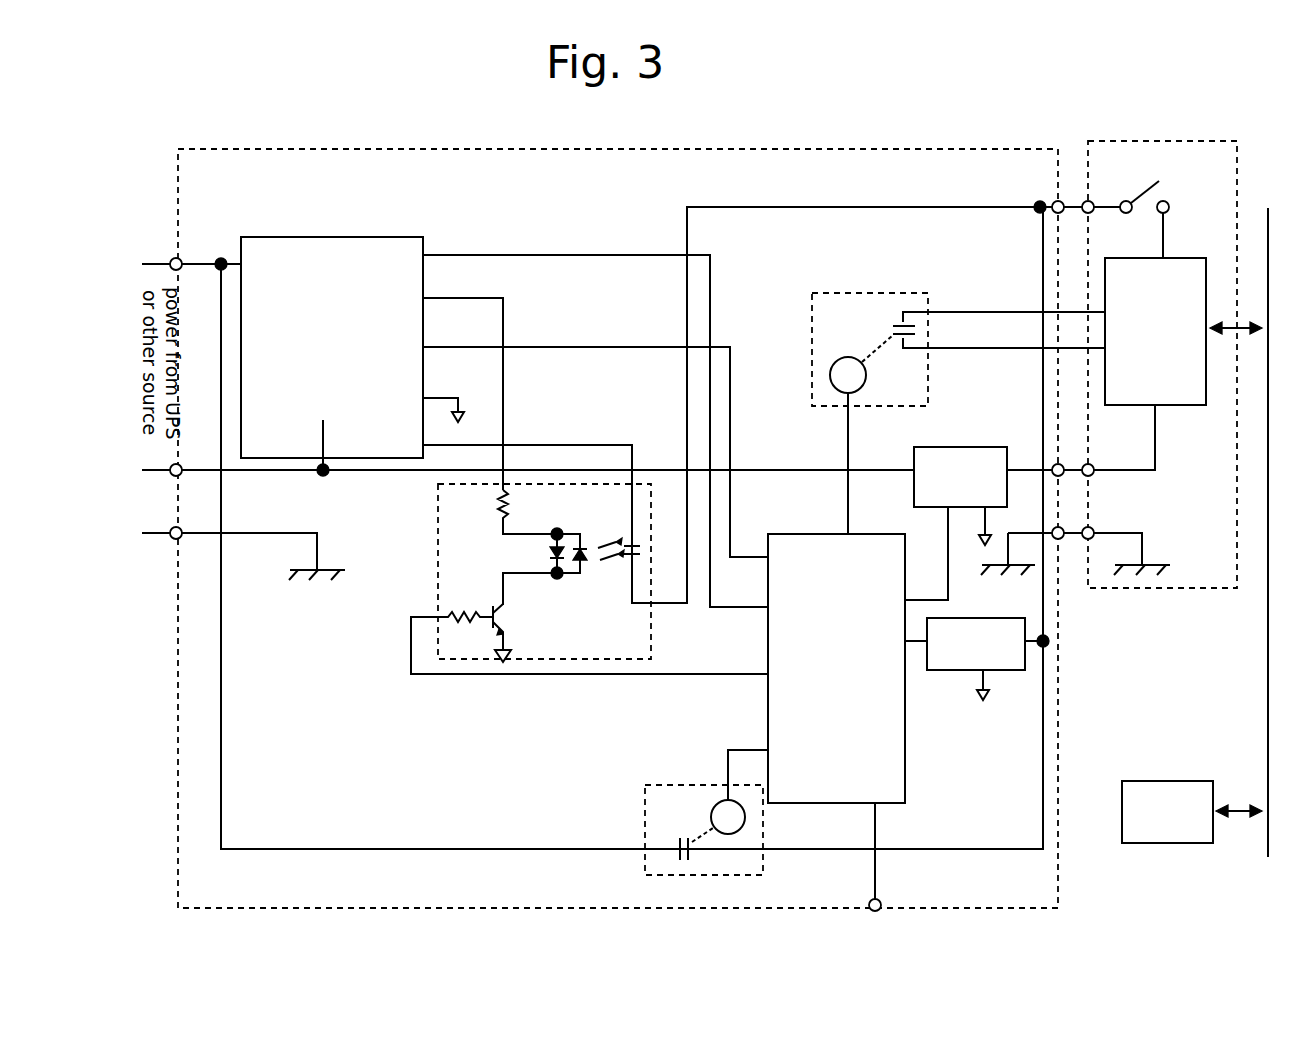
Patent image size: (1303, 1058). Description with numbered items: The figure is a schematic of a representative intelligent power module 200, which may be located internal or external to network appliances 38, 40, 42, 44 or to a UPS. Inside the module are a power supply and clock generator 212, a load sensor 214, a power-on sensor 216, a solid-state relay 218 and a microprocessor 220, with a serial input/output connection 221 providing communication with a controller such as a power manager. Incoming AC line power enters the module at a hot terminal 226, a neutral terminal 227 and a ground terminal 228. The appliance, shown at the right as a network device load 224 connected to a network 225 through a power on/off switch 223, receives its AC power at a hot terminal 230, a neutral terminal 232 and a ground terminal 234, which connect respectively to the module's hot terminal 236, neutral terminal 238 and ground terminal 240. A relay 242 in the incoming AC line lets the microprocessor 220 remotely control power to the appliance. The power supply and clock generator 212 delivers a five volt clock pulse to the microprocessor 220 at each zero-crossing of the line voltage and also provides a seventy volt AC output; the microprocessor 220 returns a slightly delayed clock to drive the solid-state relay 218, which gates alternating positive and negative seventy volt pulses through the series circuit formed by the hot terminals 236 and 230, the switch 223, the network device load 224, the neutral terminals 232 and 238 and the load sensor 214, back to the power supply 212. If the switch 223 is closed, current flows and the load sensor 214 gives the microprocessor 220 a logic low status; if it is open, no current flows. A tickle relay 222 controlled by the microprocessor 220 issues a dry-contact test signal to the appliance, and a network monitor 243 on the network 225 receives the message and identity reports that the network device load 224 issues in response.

The intelligent power module 200 is at (385, 149).
The power supply and clock generator 212 is at (340, 237).
The load sensor 214 is at (914, 447).
The power-on sensor 216 is at (1005, 618).
The solid-state relay 218 is at (652, 643).
The microprocessor 220 is at (792, 532).
The serial input/output connection 221 is at (876, 842).
The tickle relay 222 is at (812, 333).
The power on/off switch 223 is at (1157, 392).
The network device load 224 is at (1186, 405).
The network 225 is at (1268, 740).
The hot terminal 226 is at (181, 270).
The neutral terminal 227 is at (174, 472).
The ground terminal 228 is at (174, 535).
The hot terminal 230 is at (1092, 212).
The neutral terminal 232 is at (1093, 475).
The ground terminal 234 is at (1093, 538).
The hot terminal 236 is at (1043, 212).
The neutral terminal 238 is at (1057, 464).
The ground terminal 240 is at (1058, 539).
The relay 242 is at (645, 827).
The network monitor 243 is at (1122, 811).
The network appliance 38 is at (1167, 392).
The network appliance 40 is at (1167, 392).
The network appliance 42 is at (1167, 392).
The network appliance 44 is at (1180, 612).